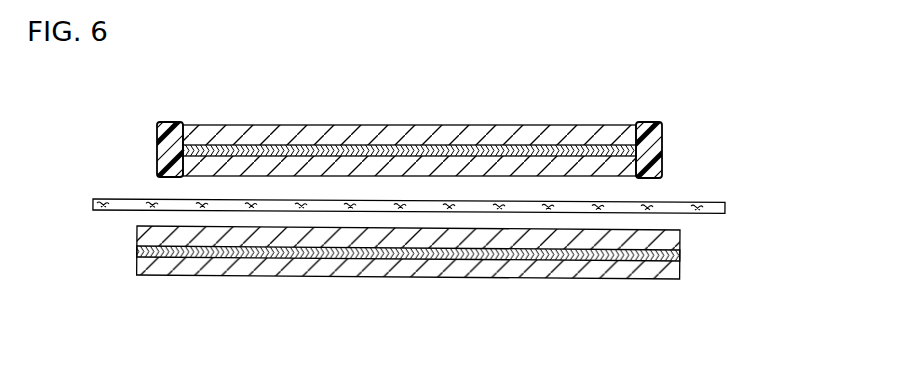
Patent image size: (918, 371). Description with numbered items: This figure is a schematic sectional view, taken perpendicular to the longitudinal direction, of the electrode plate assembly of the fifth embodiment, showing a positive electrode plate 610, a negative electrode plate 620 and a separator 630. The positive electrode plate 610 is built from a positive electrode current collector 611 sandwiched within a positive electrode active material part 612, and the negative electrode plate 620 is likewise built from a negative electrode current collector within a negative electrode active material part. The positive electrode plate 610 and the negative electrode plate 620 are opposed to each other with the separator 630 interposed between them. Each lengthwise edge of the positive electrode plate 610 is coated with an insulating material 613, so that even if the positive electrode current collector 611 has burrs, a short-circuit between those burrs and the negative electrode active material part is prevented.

The positive electrode plate 610 is at (409, 140).
The positive electrode current collector 611 is at (364, 149).
The positive electrode active material part 612 is at (476, 165).
The insulating material 613 is at (169, 143).
The negative electrode plate 620 is at (408, 285).
The separator 630 is at (698, 212).